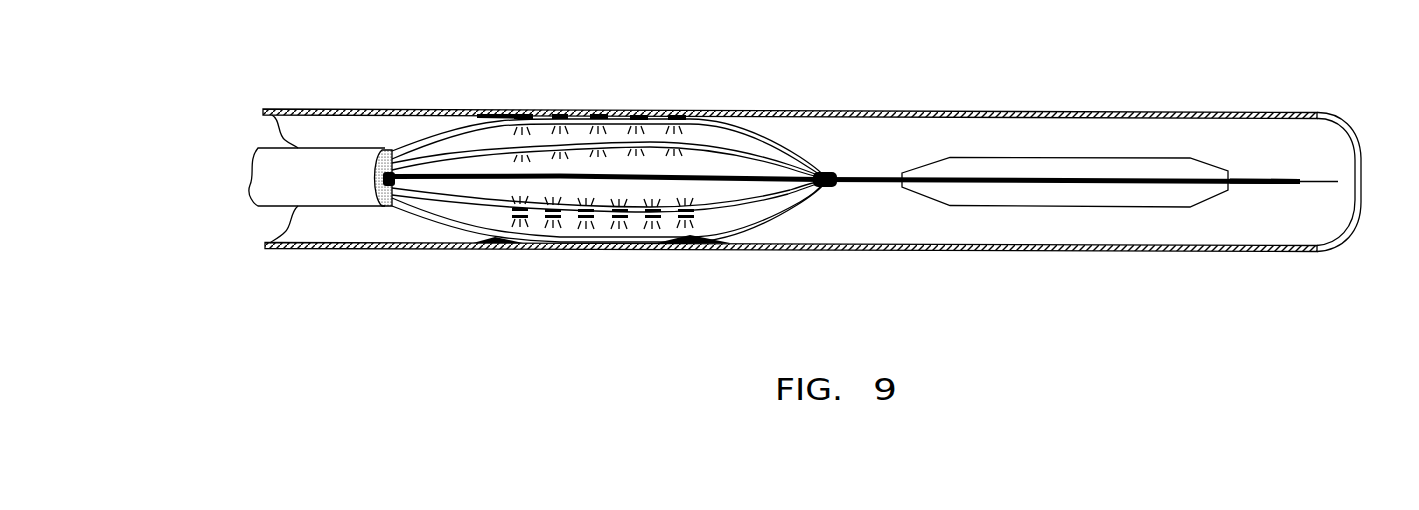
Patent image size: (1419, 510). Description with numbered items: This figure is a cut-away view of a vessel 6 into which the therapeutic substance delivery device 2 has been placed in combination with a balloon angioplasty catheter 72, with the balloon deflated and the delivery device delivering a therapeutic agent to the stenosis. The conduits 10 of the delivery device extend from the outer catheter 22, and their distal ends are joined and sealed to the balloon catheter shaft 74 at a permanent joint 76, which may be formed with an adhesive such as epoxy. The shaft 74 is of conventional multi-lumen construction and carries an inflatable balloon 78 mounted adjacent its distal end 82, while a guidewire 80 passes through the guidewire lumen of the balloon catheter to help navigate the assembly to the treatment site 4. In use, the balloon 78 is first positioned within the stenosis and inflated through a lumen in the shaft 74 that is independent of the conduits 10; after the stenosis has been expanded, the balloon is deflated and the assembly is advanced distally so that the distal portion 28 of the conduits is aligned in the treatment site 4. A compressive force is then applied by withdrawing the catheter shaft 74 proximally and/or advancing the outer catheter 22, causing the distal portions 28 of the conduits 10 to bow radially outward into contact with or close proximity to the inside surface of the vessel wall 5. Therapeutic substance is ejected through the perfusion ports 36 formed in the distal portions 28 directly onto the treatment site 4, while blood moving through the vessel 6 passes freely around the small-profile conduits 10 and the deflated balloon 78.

The therapeutic substance delivery device 2 is at (389, 228).
The treatment site 4 is at (720, 116).
The vessel wall 5 is at (356, 117).
The vessel 6 is at (284, 111).
The conduits 10 is at (422, 143).
The outer catheter 22 is at (350, 198).
The distal portion of the conduits 28 is at (783, 150).
The perfusion ports 36 is at (622, 112).
The balloon angioplasty catheter 72 is at (1065, 108).
The balloon catheter shaft 74 is at (870, 182).
The permanent joint 76 is at (838, 174).
The inflatable balloon 78 is at (997, 165).
The guidewire 80 is at (1313, 180).
The distal end of the balloon catheter shaft 82 is at (1268, 180).